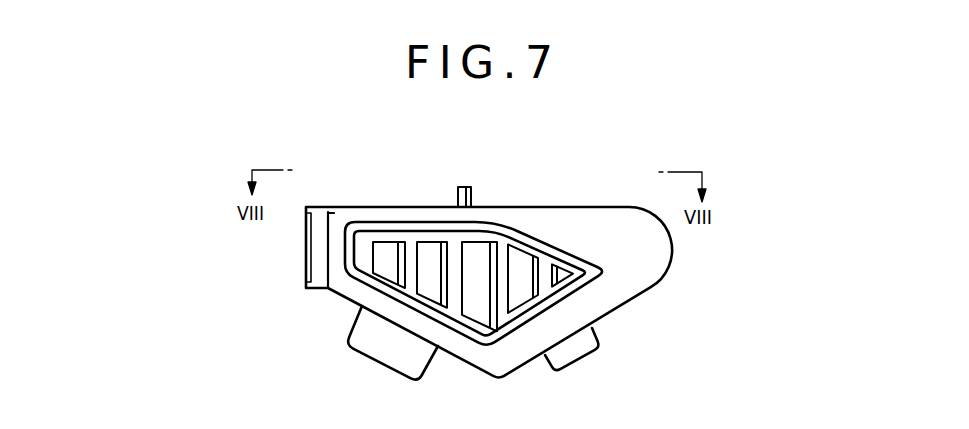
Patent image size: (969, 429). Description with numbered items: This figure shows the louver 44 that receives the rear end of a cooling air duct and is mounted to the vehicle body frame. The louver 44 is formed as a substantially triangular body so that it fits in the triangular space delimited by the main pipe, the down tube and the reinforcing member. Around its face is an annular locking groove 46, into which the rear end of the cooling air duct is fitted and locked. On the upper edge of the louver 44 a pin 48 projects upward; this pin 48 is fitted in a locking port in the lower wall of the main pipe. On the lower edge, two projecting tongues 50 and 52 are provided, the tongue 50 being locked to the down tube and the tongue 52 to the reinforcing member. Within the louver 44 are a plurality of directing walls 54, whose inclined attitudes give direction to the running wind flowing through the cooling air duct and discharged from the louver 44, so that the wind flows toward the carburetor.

The louver 44 is at (584, 190).
The annular locking groove 46 is at (596, 285).
The pin 48 is at (468, 187).
The tongue 50 is at (392, 358).
The tongue 52 is at (583, 347).
The directing walls 54 is at (427, 257).